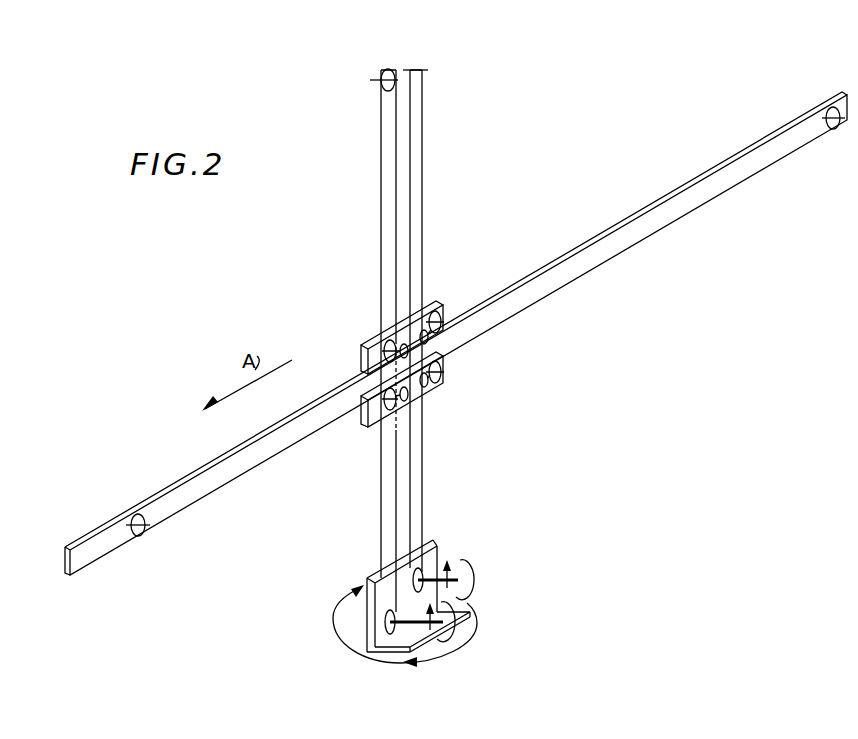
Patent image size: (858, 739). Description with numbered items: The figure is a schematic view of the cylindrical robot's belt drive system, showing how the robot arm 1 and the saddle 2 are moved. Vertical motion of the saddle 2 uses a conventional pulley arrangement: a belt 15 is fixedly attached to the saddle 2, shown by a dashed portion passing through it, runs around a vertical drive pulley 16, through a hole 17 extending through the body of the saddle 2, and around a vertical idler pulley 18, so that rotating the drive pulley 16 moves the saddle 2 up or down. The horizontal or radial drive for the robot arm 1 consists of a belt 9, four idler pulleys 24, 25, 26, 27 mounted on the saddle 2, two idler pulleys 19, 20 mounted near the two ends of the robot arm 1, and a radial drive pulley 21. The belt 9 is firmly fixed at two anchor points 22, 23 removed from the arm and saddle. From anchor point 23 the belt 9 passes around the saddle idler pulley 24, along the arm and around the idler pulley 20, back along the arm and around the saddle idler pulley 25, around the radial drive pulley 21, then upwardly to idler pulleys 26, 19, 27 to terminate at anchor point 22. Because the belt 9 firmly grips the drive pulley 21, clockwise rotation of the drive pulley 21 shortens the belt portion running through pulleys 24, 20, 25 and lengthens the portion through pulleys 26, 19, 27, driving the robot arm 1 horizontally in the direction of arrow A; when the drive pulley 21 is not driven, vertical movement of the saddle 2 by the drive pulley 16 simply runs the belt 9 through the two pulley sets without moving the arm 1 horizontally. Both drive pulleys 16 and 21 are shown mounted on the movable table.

The robot arm 1 is at (128, 503).
The saddle 2 is at (402, 363).
The belt 9 is at (411, 108).
The belt 15 is at (381, 173).
The vertical drive pulley 16 is at (378, 642).
The hole 17 is at (362, 424).
The vertical idler pulley 18 is at (381, 86).
The idler pulley 19 is at (133, 532).
The idler pulley 20 is at (832, 130).
The radial drive pulley 21 is at (420, 572).
The anchor point 22 is at (409, 72).
The anchor point 23 is at (422, 70).
The saddle idler pulley 24 is at (436, 314).
The saddle idler pulley 25 is at (429, 383).
The idler pulley 26 is at (406, 400).
The idler pulley 27 is at (362, 366).